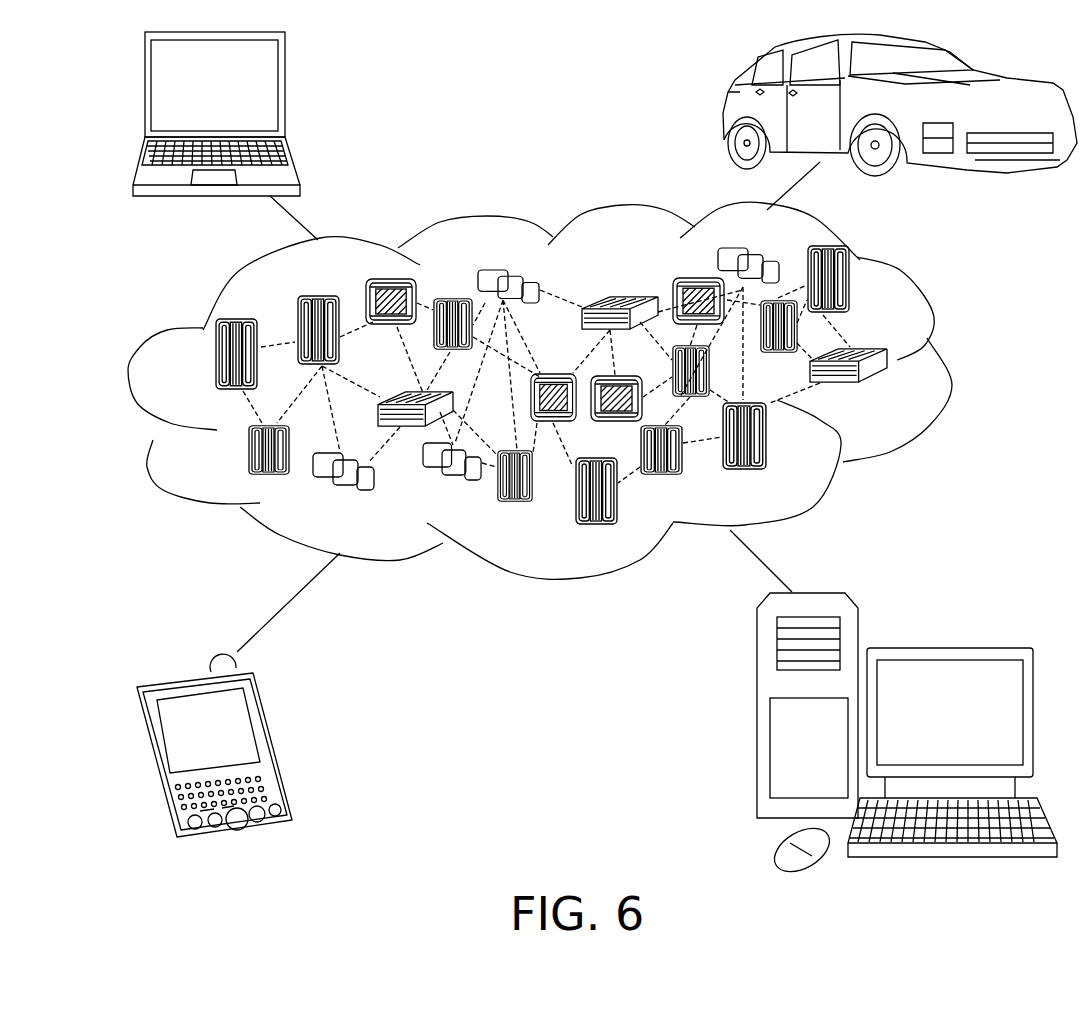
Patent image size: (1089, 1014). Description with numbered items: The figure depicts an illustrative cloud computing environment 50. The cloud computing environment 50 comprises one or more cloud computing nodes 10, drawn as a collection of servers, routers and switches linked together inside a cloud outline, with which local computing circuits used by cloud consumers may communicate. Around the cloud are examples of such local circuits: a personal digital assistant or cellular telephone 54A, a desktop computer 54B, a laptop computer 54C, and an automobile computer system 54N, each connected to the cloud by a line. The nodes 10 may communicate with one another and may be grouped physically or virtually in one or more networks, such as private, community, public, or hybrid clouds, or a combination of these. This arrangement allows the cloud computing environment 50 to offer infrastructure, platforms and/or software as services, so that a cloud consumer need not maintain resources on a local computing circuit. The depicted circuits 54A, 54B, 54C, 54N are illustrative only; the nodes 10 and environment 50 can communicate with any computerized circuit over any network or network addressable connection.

The cloud computing nodes 10 is at (890, 392).
The cloud computing environment 50 is at (950, 362).
The personal digital assistant (PDA) or cellular telephone 54A is at (273, 743).
The desktop computer 54B is at (947, 648).
The laptop computer 54C is at (285, 92).
The automobile computer system 54N is at (728, 108).